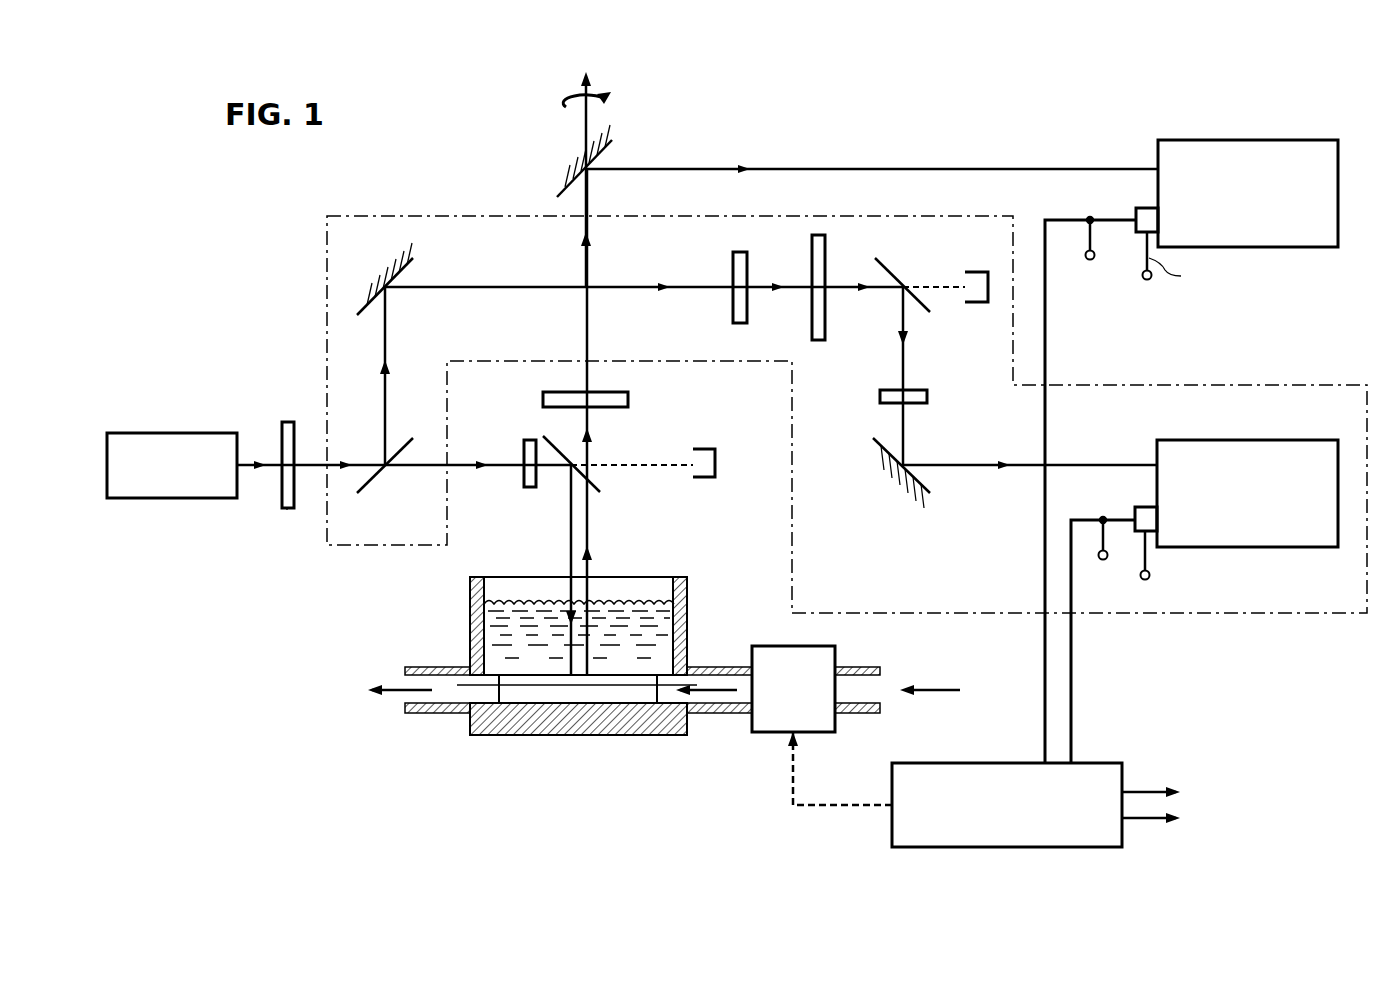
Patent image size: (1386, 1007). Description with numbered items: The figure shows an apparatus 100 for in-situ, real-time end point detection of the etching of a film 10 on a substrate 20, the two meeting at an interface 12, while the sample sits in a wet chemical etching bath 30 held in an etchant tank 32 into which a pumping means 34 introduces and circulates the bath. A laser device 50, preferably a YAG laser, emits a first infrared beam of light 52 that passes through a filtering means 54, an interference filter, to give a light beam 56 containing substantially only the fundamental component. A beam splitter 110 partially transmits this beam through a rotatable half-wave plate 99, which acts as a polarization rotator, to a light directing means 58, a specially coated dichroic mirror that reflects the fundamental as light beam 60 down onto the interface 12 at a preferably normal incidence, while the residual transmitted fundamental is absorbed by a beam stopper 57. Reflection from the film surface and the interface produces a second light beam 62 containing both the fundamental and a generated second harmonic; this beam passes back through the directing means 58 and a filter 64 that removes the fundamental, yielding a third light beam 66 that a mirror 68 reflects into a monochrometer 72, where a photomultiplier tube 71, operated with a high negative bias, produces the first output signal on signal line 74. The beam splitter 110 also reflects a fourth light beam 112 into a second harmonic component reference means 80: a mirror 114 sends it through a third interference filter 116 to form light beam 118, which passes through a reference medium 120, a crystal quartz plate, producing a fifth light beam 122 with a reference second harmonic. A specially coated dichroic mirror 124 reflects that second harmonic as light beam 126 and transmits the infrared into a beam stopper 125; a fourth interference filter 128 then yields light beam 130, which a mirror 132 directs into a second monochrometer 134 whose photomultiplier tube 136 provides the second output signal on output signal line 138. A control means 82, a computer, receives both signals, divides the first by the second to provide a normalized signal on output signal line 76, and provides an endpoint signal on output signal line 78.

The apparatus 100 is at (268, 244).
The laser device 50 is at (172, 465).
The first infrared beam of light 52 is at (280, 462).
The filtering means 54 is at (287, 508).
The light beam 56 is at (362, 455).
The beam splitter 110 is at (367, 485).
The fourth light beam 112 is at (386, 332).
The mirror 114 is at (412, 270).
The third light beam 66 is at (588, 267).
The mirror 68 is at (612, 158).
The third interference filter 116 is at (733, 304).
The light beam 118 is at (795, 292).
The reference medium 120 is at (825, 252).
The fifth light beam 122 is at (845, 292).
The specially coated dichroic mirror 124 is at (930, 312).
The beam stopper 125 is at (965, 272).
The light beam 126 is at (902, 378).
The fourth interference filter 128 is at (918, 403).
The light beam 130 is at (975, 467).
The mirror 132 is at (925, 482).
The second monochrometer 134 is at (1247, 493).
The photomultiplier tube 136 is at (1134, 512).
The output signal line 138 is at (1072, 668).
The monochrometer 72 is at (1248, 193).
The photomultiplier tube 71 is at (1135, 212).
The signal line 74 is at (1046, 348).
The output signal line 76 is at (1145, 790).
The output signal line 78 is at (1145, 822).
The second harmonic component reference means 80 is at (1258, 614).
The control means 82 is at (955, 789).
The half-wave plate 99 is at (524, 478).
The light directing means 58 is at (598, 484).
The beam stopper 57 is at (704, 477).
The light beam 60 is at (570, 538).
The second light beam 62 is at (589, 420).
The filter 64 is at (628, 400).
The wet chemical etching bath 30 is at (470, 628).
The etchant tank 32 is at (688, 617).
The pumping means 34 is at (664, 689).
The film 10 is at (620, 680).
The interface 12 is at (527, 683).
The substrate 20 is at (582, 697).